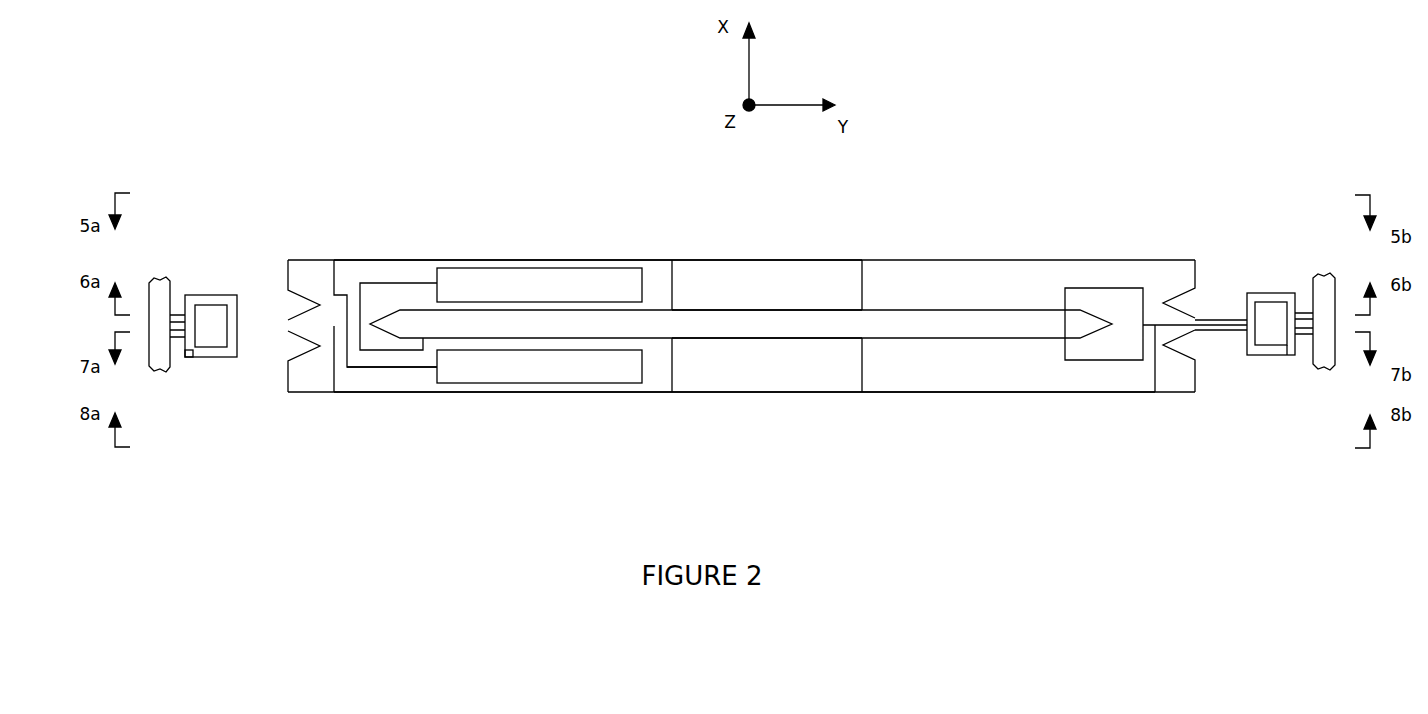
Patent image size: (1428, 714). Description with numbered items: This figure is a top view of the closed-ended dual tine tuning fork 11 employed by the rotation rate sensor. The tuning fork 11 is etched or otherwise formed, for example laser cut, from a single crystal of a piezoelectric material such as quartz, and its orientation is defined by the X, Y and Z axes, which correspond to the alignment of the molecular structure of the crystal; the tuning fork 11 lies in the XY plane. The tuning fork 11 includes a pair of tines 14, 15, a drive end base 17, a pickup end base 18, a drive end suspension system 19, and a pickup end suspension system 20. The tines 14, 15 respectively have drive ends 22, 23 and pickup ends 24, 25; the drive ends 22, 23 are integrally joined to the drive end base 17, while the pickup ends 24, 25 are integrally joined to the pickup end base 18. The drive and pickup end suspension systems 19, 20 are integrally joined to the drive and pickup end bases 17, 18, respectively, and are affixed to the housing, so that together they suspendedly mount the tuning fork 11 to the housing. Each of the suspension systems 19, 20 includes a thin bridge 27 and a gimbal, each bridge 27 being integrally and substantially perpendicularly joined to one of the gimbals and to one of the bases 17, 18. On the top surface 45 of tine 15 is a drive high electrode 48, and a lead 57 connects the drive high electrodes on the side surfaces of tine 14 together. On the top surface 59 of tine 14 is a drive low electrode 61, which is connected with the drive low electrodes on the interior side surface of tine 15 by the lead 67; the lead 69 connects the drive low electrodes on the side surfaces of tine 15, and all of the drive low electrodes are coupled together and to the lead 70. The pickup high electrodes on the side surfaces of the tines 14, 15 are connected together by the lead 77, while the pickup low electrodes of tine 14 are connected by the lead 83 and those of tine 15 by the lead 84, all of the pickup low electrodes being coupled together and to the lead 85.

The closed-ended dual tine tuning fork 11 is at (925, 259).
The tine 14 is at (767, 248).
The tine 15 is at (767, 390).
The drive end base 17 is at (313, 259).
The pickup end base 18 is at (1197, 378).
The drive end suspension system 19 is at (742, 272).
The pickup end suspension system 20 is at (1239, 270).
The drive end 22 is at (423, 259).
The drive end 23 is at (423, 392).
The pickup end 24 is at (1072, 259).
The pickup end 25 is at (1072, 392).
The thin bridge 27 is at (1195, 267).
The top surface 45 is at (743, 370).
The drive high electrode 48 is at (532, 370).
The lead 57 is at (673, 278).
The top surface 59 is at (738, 273).
The drive low electrode 61 is at (532, 283).
The lead 67 is at (388, 283).
The lead 69 is at (672, 370).
The lead 70 is at (328, 377).
The lead 77 is at (1288, 352).
The lead 83 is at (862, 290).
The lead 84 is at (862, 370).
The lead 85 is at (1155, 392).